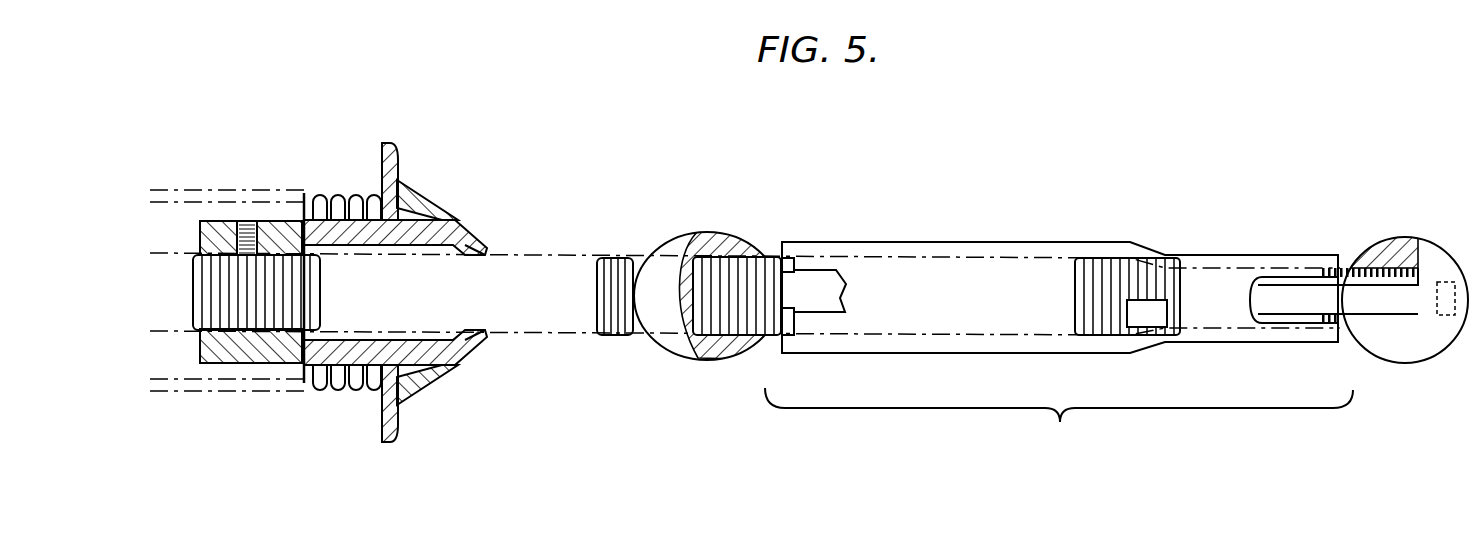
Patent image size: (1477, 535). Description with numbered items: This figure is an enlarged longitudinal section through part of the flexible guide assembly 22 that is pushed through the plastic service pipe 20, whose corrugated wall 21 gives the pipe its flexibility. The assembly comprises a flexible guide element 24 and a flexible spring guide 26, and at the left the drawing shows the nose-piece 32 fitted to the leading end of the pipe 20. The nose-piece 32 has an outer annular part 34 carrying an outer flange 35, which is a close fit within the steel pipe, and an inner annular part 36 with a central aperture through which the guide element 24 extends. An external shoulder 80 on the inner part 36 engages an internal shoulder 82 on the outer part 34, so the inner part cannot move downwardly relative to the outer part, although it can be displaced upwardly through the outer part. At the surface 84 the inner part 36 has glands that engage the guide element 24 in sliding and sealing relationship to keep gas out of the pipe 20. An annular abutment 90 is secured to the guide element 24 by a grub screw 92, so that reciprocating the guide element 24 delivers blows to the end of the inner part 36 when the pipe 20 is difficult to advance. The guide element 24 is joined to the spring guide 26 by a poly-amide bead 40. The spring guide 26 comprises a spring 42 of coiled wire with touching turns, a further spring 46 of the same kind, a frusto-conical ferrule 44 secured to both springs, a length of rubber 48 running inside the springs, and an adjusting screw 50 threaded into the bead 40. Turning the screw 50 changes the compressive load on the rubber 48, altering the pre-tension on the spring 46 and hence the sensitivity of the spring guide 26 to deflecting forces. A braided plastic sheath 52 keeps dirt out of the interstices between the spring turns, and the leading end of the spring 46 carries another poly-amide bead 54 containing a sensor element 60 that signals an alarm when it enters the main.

The plastic service pipe 20 is at (347, 188).
The corrugated wall 21 is at (305, 215).
The flexible guide assembly 22 is at (618, 345).
The flexible guide element 24 is at (557, 268).
The flexible spring guide 26 is at (1059, 429).
The nose-piece 32 is at (430, 399).
The outer annular part 34 is at (399, 187).
The outer flange 35 is at (388, 143).
The inner annular part 36 is at (448, 226).
The bead 40 is at (683, 240).
The spring 42 is at (965, 275).
The frusto-conical ferrule 44 is at (1148, 323).
The further spring 46 is at (1215, 273).
The length of rubber 48 is at (813, 288).
The adjusting screw 50 is at (680, 268).
The braided plastic sheath 52 is at (1063, 242).
The bead 54 is at (1392, 252).
The sensor element 60 is at (1440, 313).
The external shoulder 80 is at (345, 388).
The internal shoulder 82 is at (408, 359).
The surface 84 is at (483, 243).
The annular abutment 90 is at (235, 357).
The grub screw 92 is at (228, 222).